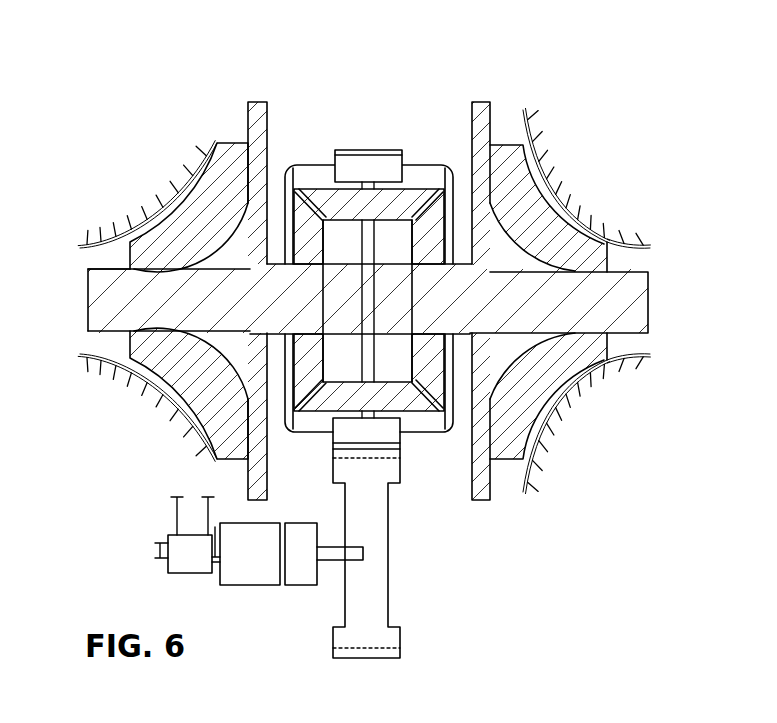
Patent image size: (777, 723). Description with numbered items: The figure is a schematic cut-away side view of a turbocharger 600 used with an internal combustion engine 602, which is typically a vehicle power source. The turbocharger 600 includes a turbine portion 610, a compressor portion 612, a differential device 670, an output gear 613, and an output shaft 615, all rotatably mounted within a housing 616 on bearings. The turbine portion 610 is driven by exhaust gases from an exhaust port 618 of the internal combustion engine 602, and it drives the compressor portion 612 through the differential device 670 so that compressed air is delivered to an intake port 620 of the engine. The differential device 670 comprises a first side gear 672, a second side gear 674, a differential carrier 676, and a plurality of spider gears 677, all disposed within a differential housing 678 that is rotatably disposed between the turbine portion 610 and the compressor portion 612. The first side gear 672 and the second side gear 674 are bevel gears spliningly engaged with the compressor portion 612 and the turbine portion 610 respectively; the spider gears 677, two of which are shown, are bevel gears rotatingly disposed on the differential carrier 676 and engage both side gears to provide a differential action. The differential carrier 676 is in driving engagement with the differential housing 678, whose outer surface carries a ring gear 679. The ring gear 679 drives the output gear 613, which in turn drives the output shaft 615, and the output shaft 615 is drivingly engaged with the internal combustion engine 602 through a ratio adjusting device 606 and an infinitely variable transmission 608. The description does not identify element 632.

The turbocharger 600 is at (523, 77).
The turbine portion 610 is at (650, 292).
The compressor portion 612 is at (88, 300).
The housing 616 is at (218, 140).
The differential device 670 is at (296, 111).
The differential housing 678 is at (309, 165).
The ring gear 679 is at (370, 150).
The spider gears 677 is at (418, 189).
The first side gear 672 is at (338, 237).
The differential carrier 676 is at (389, 237).
The second side gear 674 is at (412, 364).
The output gear 613 is at (390, 535).
The output shaft 615 is at (333, 547).
The ratio adjusting device 606 is at (300, 585).
The infinitely variable transmission 608 is at (250, 585).
The internal combustion engine 602 is at (190, 573).
The intake port 620 is at (215, 527).
The exhaust port 618 is at (172, 535).
The connector 632 is at (160, 558).